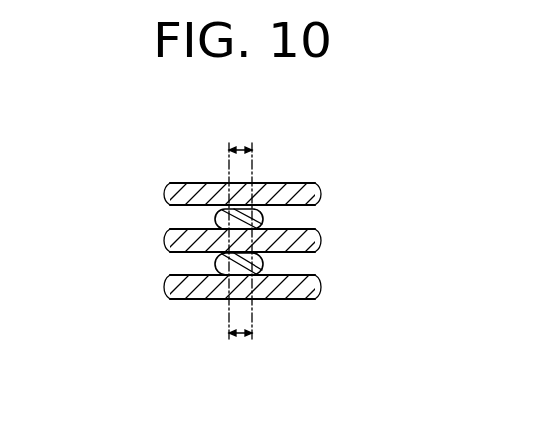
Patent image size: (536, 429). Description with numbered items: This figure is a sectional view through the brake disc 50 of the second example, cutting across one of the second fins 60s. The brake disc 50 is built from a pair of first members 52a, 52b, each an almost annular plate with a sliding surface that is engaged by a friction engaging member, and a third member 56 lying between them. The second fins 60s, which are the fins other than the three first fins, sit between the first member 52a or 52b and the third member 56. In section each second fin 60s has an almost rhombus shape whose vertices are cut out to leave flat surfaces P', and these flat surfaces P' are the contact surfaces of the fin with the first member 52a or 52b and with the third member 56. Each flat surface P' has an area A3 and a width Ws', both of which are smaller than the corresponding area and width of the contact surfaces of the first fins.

The brake disc 50 is at (332, 157).
The first member 52a is at (208, 192).
The first member 52b is at (293, 288).
The third member 56 is at (305, 242).
The second fin 60s is at (216, 217).
The flat surface P' is at (234, 241).
The width of the flat surfaces Ws' is at (240, 225).
The area of the flat surface A3 is at (239, 351).